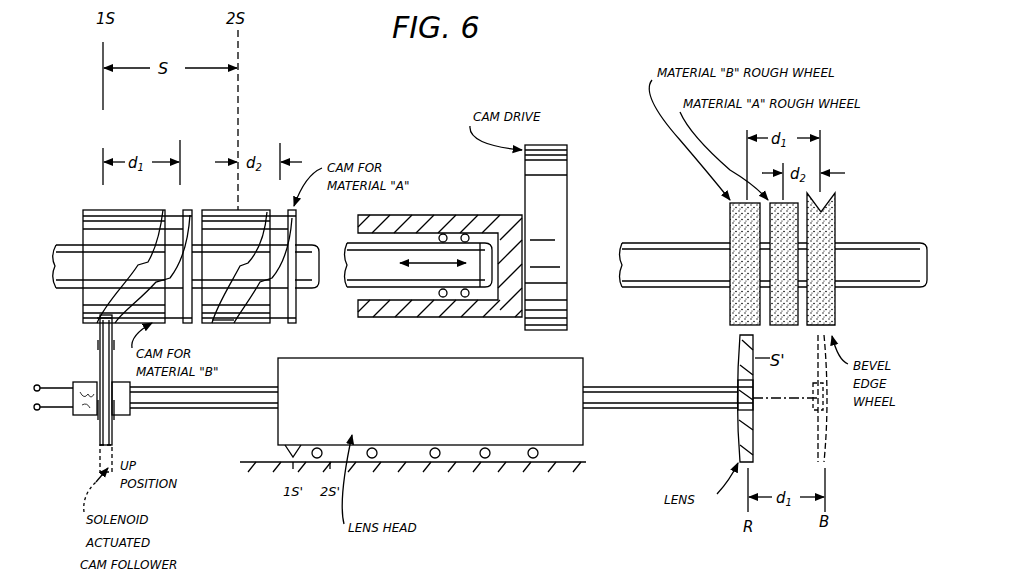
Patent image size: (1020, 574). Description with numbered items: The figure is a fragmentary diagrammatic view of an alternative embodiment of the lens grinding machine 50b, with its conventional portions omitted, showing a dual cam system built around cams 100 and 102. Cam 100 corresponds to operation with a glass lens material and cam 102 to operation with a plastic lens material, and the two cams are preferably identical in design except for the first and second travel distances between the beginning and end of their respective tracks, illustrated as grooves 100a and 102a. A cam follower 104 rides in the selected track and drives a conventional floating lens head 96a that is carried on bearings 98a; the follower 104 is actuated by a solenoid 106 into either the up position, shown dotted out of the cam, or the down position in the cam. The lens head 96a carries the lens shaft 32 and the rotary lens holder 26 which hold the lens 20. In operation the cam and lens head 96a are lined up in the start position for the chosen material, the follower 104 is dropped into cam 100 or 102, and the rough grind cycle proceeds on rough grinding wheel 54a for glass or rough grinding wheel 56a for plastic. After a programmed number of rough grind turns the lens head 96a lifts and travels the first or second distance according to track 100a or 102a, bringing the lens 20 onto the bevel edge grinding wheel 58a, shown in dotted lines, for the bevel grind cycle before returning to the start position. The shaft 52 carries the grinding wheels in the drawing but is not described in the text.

The lens grinding machine 50b is at (66, 220).
The cam 100 is at (146, 207).
The cam 102 is at (223, 222).
The groove 100a is at (96, 322).
The groove 102a is at (244, 326).
The cam follower 104 is at (100, 353).
The solenoid 106 is at (85, 418).
The lens head 96a is at (584, 362).
The bearings 98a is at (438, 465).
The lens shaft 32 is at (657, 408).
The rotary lens holder 26 is at (740, 412).
The lens 20 is at (756, 420).
The rough grinding wheel 54a is at (735, 215).
The rough grinding wheel 56a is at (753, 283).
The bevel edge grinding wheel 58a is at (836, 212).
The wheel shaft 52 is at (890, 290).